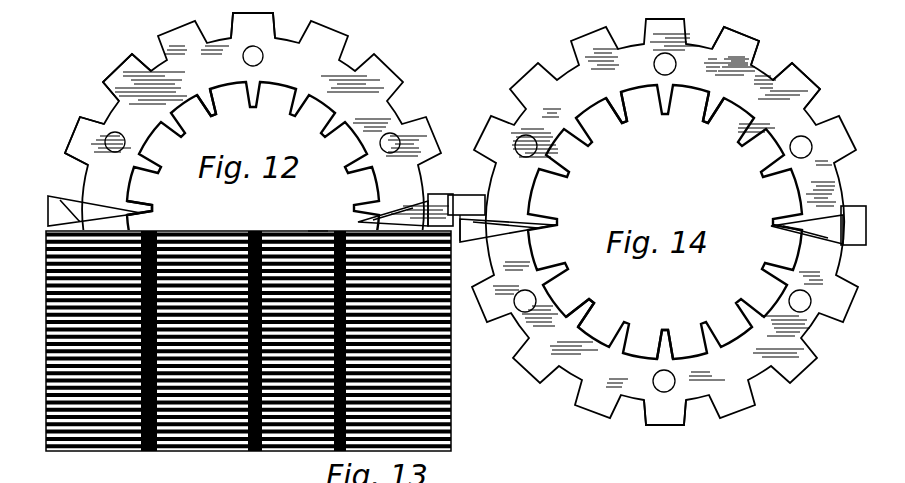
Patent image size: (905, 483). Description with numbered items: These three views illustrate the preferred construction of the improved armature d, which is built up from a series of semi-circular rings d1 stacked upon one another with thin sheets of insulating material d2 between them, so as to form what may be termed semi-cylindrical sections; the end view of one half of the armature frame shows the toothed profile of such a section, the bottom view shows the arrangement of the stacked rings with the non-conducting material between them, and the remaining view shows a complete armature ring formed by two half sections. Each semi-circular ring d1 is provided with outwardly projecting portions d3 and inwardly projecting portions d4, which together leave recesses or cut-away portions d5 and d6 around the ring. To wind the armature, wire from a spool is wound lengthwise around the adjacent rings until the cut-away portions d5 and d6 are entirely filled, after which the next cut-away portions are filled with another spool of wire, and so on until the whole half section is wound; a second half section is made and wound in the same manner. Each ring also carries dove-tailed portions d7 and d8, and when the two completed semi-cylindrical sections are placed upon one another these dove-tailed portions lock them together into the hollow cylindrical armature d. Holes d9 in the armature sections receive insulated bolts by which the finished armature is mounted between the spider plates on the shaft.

In FIG. 12, the armature d is at (257, 208).
In FIG. 14, the armature d is at (665, 222).
In FIG. 12, the semi-circular ring d1 is at (230, 48).
In FIG. 12, the insulating material d2 is at (305, 224).
In FIG. 13, the insulating material d2 is at (447, 392).
In FIG. 12, the outwardly projecting portion d3 is at (107, 67).
In FIG. 14, the outwardly projecting portion d3 is at (752, 48).
In FIG. 12, the inwardly projecting portion d4 is at (200, 126).
In FIG. 14, the inwardly projecting portion d4 is at (663, 322).
In FIG. 12, the recess or cut-away portion d5 is at (84, 106).
In FIG. 14, the recess or cut-away portion d5 is at (801, 125).
In FIG. 12, the recess or cut-away portion d6 is at (121, 187).
In FIG. 14, the recess or cut-away portion d6 is at (590, 322).
In FIG. 12, the dove-tailed portion d7 is at (238, 204).
In FIG. 14, the dove-tailed portion d7 is at (651, 215).
In FIG. 12, the dove-tailed portion d8 is at (423, 206).
In FIG. 14, the dove-tailed portion d8 is at (465, 188).
In FIG. 12, the hole d9 is at (391, 130).
In FIG. 14, the hole d9 is at (668, 58).